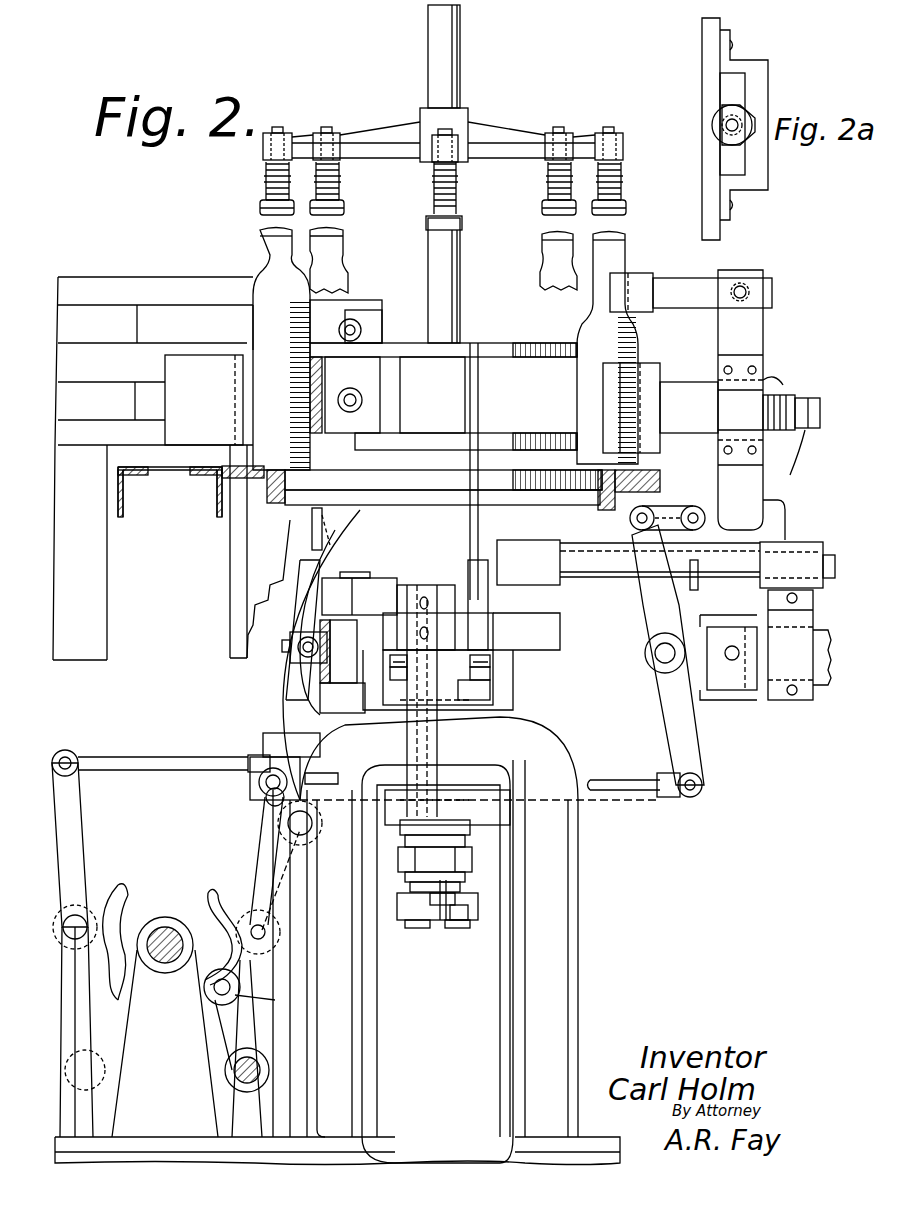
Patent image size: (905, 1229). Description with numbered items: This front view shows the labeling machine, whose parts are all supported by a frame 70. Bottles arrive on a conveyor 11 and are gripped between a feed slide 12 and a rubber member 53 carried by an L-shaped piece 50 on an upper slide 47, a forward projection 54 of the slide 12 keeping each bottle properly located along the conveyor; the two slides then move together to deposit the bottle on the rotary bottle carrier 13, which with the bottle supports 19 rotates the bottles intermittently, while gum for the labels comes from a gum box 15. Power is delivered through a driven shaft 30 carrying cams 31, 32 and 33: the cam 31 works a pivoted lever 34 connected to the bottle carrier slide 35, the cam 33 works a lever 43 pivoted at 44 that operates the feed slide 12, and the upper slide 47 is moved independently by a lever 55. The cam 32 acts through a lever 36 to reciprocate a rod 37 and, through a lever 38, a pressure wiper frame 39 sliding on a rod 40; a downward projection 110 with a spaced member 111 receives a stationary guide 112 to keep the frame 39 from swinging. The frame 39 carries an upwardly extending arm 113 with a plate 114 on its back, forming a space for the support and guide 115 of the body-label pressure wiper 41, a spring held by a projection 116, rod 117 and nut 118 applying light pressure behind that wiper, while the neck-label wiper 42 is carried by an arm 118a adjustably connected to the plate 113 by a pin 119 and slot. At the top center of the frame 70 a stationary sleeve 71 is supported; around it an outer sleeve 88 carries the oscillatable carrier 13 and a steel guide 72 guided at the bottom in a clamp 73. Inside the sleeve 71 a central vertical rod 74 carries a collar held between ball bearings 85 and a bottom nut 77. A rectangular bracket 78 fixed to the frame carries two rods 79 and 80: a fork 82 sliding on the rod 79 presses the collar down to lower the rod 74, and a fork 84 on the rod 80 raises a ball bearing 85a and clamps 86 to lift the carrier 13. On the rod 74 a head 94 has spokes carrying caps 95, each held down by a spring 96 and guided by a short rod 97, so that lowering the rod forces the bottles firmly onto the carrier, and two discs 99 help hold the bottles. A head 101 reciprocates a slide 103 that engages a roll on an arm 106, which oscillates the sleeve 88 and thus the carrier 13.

In FIG. 2, the conveyor 11 is at (175, 470).
In FIG. 2, the feed slide 12 is at (173, 396).
In FIG. 2, the rotary bottle carrier 13 is at (280, 500).
In FIG. 2, the gum box 15 is at (474, 845).
In FIG. 2, the bottle support 19 is at (250, 505).
In FIG. 2, the driven shaft 30 is at (168, 927).
In FIG. 2, the cam 31 is at (120, 926).
In FIG. 2, the cam 32 is at (208, 893).
In FIG. 2, the cam 33 is at (205, 995).
In FIG. 2, the pivoted lever 34 is at (72, 826).
In FIG. 2, the bottle carrier slide 35 is at (262, 752).
In FIG. 2, the lever 36 is at (270, 988).
In FIG. 2, the rod 37 is at (620, 784).
In FIG. 2, the lever 38 is at (655, 612).
In FIG. 2, the pressure wiper frame 39 is at (745, 552).
In FIG. 2, the rod 40 is at (585, 570).
In FIG. 2, the pressure wiper 41 is at (610, 390).
In FIG. 2, the pressure wiper 42 is at (635, 285).
In FIG. 2, the lever 43 is at (283, 660).
In FIG. 2, the pivot 44 is at (312, 826).
In FIG. 2, the upper slide 47 is at (140, 325).
In FIG. 2, the L-shaped piece 50 is at (362, 330).
In FIG. 2, the rubber member 53 is at (445, 349).
In FIG. 2, the forward projection 54 is at (255, 337).
In FIG. 2, the lever 55 is at (313, 544).
In FIG. 2, the frame 70 is at (580, 952).
In FIG. 2, the stationary sleeve 71 is at (460, 384).
In FIG. 2, the steel guide 72 is at (345, 865).
In FIG. 2, the clamp 73 is at (462, 812).
In FIG. 2, the central vertical rod 74 is at (460, 55).
In FIG. 2, the bottom nut 77 is at (418, 905).
In FIG. 2, the rectangular bracket 78 is at (500, 908).
In FIG. 2, the rod 79 is at (415, 928).
In FIG. 2, the rod 80 is at (458, 930).
In FIG. 2, the fork 82 is at (468, 862).
In FIG. 2, the fork 84 is at (480, 690).
In FIG. 2, the ball bearings 85 is at (468, 840).
In FIG. 2, the ball bearing 85a is at (492, 676).
In FIG. 2, the clamps 86 is at (492, 660).
In FIG. 2, the outside sleeve 88 is at (400, 548).
In FIG. 2, the head 94 is at (500, 148).
In FIG. 2, the cap 95 is at (260, 208).
In FIG. 2, the spring 96 is at (341, 180).
In FIG. 2, the short rod 97 is at (325, 127).
In FIG. 2, the disc 99 is at (492, 348).
In FIG. 2, the head 101 is at (306, 633).
In FIG. 2, the slide 103 is at (335, 668).
In FIG. 2, the arm 106 is at (371, 575).
In FIG. 2, the downward projection 110 is at (813, 598).
In FIG. 2, the member 111 is at (805, 698).
In FIG. 2, the stationary guide 112 is at (740, 672).
In FIG. 2, the upwardly extending arm 113 is at (722, 320).
In FIG. 2A, the upwardly extending arm 113 is at (710, 52).
In FIG. 2, the plate 114 is at (753, 360).
In FIG. 2A, the plate 114 is at (755, 70).
In FIG. 2, the support and guide 115 is at (703, 425).
In FIG. 2A, the support and guide 115 is at (735, 165).
In FIG. 2, the projection 116 is at (810, 393).
In FIG. 2A, the projection 116 is at (745, 100).
In FIG. 2A, the rod 117 is at (722, 125).
In FIG. 2, the nut 118 is at (820, 462).
In FIG. 2A, the nut 118 is at (718, 138).
In FIG. 2, the arm 118a is at (700, 278).
In FIG. 2, the pin 119 is at (746, 292).